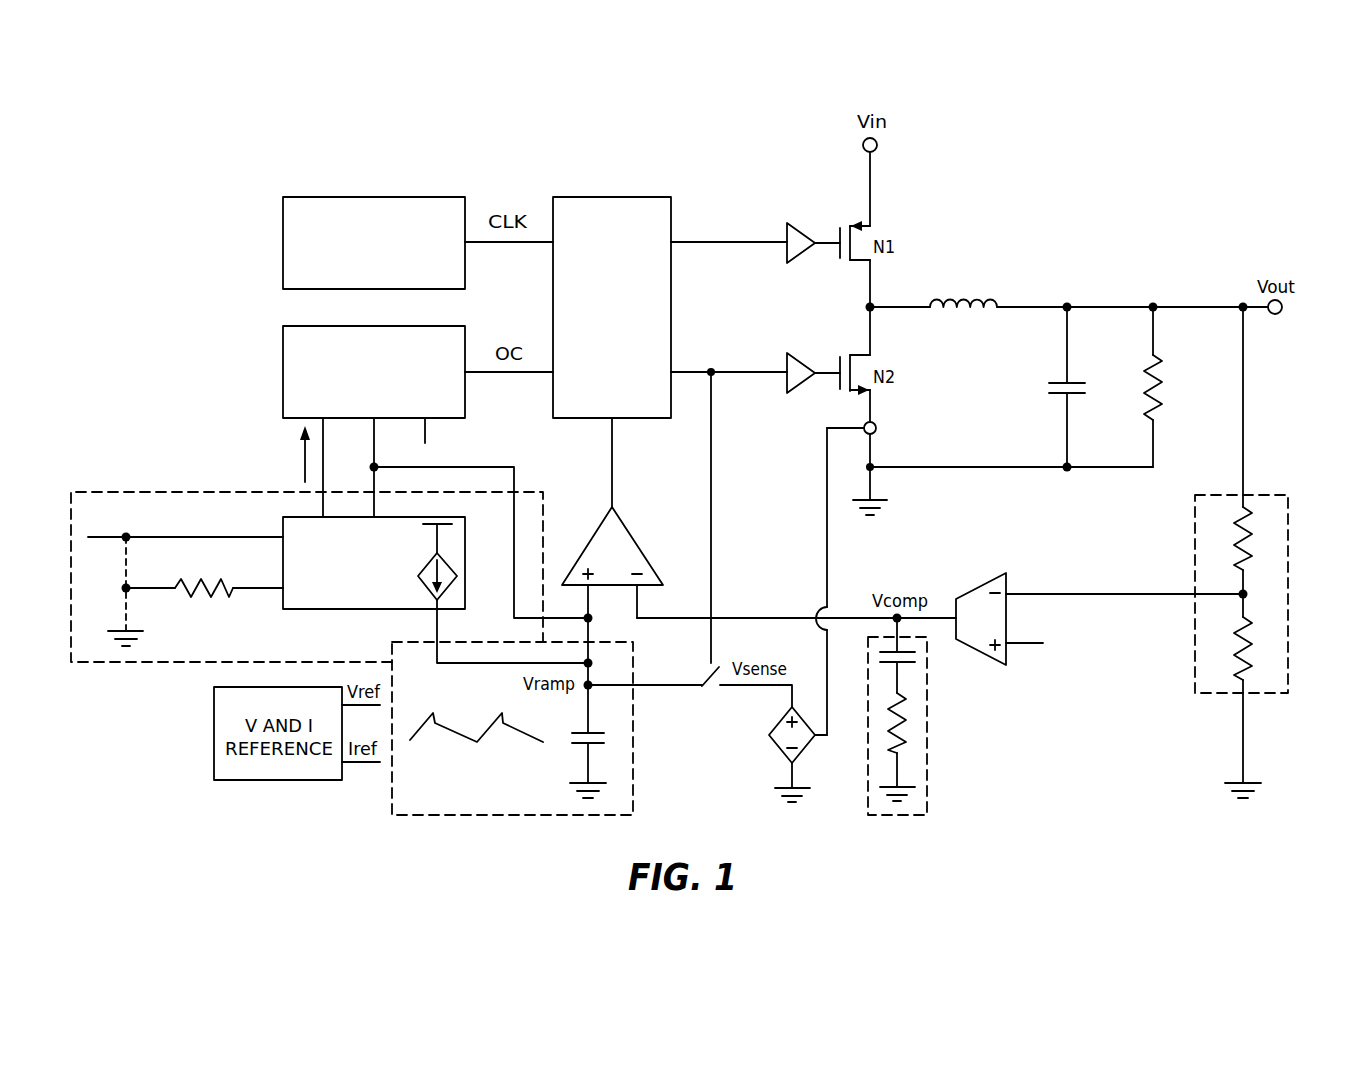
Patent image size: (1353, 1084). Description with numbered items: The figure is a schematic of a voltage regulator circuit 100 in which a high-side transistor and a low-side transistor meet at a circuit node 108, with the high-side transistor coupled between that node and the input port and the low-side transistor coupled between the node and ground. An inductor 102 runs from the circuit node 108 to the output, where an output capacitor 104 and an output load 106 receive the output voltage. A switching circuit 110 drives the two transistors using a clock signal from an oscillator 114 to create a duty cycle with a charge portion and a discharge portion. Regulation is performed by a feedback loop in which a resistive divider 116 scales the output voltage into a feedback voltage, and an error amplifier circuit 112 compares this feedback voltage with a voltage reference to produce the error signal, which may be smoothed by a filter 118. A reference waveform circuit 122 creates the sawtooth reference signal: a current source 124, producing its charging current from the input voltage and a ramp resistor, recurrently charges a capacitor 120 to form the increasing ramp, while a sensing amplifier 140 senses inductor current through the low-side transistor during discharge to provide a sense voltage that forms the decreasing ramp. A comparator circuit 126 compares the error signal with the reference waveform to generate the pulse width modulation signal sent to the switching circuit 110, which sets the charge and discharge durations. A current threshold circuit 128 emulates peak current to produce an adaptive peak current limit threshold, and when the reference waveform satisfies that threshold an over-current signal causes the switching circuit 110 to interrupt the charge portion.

The voltage regulator circuit 100 is at (1238, 143).
The inductor 102 is at (978, 300).
The output capacitor 104 is at (1075, 382).
The output load 106 is at (1162, 380).
The circuit node 108 is at (866, 307).
The switching circuit 110 is at (610, 197).
The error amplifier circuit 112 is at (980, 583).
The oscillator 114 is at (372, 197).
The resistive divider 116 is at (1290, 553).
The filter 118 is at (928, 723).
The capacitor 120 is at (597, 730).
The reference waveform circuit 122 is at (137, 492).
The current source 124 is at (452, 563).
The comparator circuit 126 is at (636, 545).
The current threshold circuit 128 is at (372, 326).
The sensing amplifier 140 is at (778, 752).